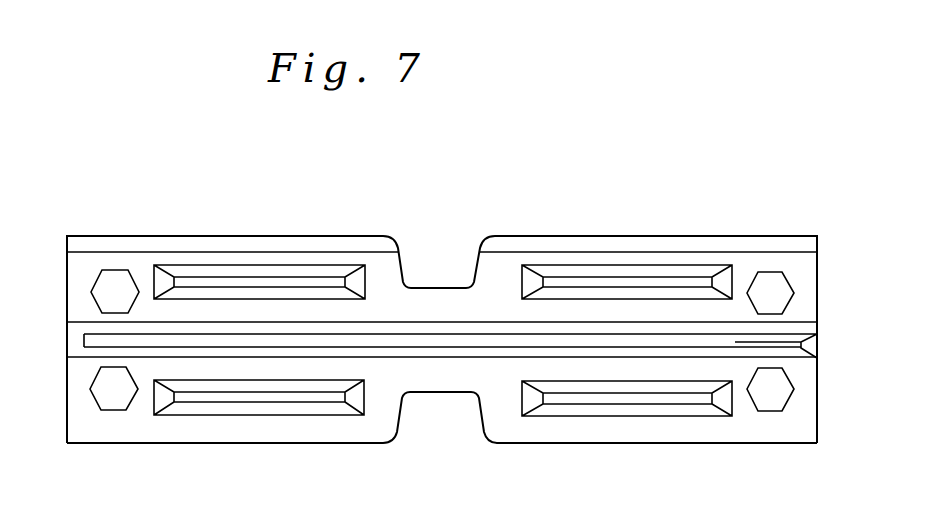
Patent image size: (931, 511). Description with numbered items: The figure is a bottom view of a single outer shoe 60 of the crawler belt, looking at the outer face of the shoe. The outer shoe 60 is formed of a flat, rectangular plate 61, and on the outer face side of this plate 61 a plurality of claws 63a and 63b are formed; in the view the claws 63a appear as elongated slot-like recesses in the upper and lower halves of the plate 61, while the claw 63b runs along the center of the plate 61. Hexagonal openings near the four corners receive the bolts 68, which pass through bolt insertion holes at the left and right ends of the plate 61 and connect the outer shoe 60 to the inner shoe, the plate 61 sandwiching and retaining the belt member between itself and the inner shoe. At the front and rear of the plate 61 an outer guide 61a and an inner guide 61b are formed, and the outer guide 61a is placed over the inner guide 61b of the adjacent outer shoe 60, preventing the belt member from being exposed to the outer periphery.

The outer shoe 60 is at (649, 235).
The plate 61 is at (382, 375).
The outer guide 61a is at (295, 430).
The inner guide 61b is at (282, 248).
The claw 63a is at (215, 398).
The claw 63b is at (447, 345).
The bolt 68 is at (778, 297).